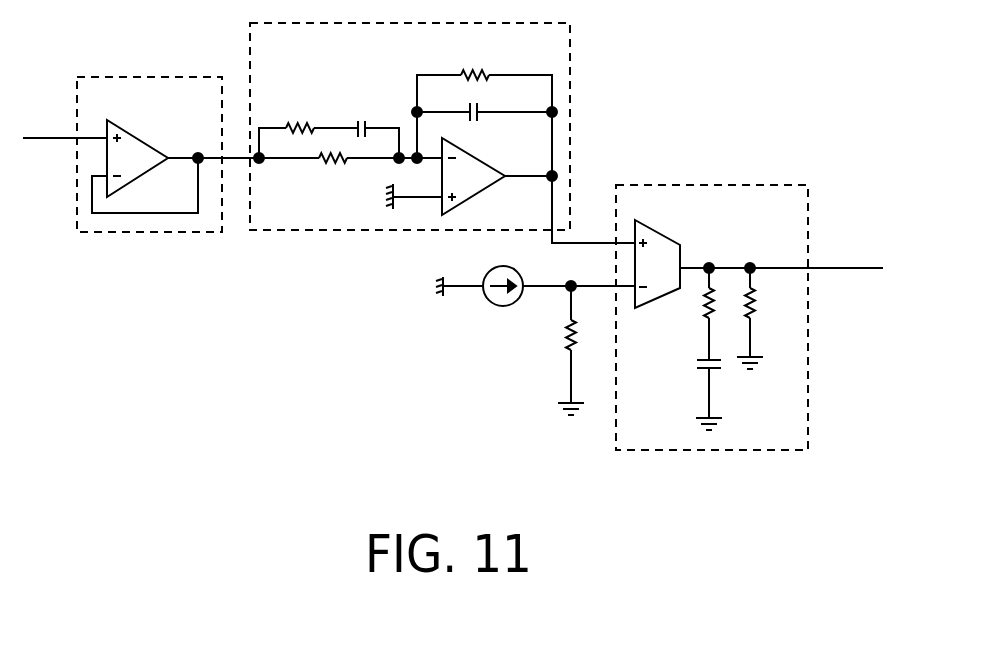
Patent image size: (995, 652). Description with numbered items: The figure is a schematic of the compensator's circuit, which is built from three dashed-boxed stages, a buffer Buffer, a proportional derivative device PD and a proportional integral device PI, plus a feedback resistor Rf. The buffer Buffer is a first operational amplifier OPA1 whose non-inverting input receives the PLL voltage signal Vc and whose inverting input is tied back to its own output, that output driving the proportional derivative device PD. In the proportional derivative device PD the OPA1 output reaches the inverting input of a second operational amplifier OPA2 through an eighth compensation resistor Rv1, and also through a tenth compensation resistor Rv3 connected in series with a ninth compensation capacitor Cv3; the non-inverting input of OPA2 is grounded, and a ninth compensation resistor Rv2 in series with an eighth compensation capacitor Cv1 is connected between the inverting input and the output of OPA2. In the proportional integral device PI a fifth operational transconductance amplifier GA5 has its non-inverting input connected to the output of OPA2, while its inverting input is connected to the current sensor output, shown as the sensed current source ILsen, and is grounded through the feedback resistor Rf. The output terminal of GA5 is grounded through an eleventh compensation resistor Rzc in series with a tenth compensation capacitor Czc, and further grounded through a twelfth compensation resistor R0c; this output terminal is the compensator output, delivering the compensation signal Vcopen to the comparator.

The buffer Buffer is at (149, 136).
The proportional derivative device PD is at (410, 126).
The proportional integral device PI is at (712, 317).
The PLL voltage signal Vc is at (65, 123).
The first operational amplifier OPA1 is at (175, 157).
The eighth compensation resistor Rv1 is at (350, 179).
The ninth compensation resistor Rv2 is at (484, 106).
The tenth compensation resistor Rv3 is at (308, 123).
The eighth compensation capacitor Cv1 is at (484, 129).
The ninth compensation capacitor Cv3 is at (377, 124).
The second operational amplifier OPA2 is at (510, 190).
The fifth operational transconductance amplifier GA5 is at (669, 253).
The sensed inductor current source ILsen is at (535, 297).
The feedback resistor Rf is at (582, 350).
The eleventh compensation resistor Rzc is at (689, 314).
The tenth compensation capacitor Czc is at (691, 395).
The twelfth compensation resistor R0c is at (767, 318).
The compensation signal Vcopen is at (790, 252).